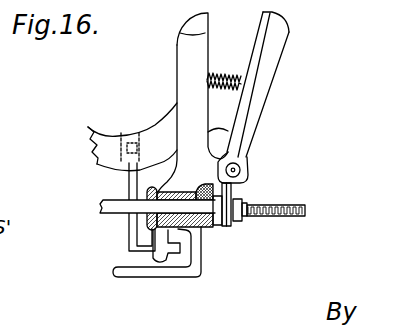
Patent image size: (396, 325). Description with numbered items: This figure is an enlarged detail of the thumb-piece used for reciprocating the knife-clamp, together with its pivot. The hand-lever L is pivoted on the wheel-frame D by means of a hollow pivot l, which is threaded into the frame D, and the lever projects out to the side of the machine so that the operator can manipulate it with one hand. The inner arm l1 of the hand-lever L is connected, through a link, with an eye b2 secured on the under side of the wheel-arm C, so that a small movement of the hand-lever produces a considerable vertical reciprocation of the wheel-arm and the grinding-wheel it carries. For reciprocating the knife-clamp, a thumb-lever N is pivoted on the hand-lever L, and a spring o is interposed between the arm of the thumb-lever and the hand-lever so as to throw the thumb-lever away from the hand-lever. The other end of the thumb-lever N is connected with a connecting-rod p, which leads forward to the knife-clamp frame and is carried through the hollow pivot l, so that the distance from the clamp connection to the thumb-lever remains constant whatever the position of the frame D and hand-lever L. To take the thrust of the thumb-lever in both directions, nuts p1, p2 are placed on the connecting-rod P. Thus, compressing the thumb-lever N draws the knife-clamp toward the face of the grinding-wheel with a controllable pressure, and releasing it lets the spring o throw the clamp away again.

The hand-lever L is at (184, 60).
The thumb-lever N is at (278, 62).
The spring o is at (225, 70).
The wheel-arm C is at (100, 145).
The eye b2 is at (127, 143).
The hollow pivot l is at (148, 193).
The connecting-rod P is at (80, 241).
The inner arm of the hand-lever l1 is at (163, 234).
The wheel-frame D is at (200, 264).
The nut p1 is at (232, 197).
The nut p2 is at (236, 214).
The connecting-rod p is at (305, 211).